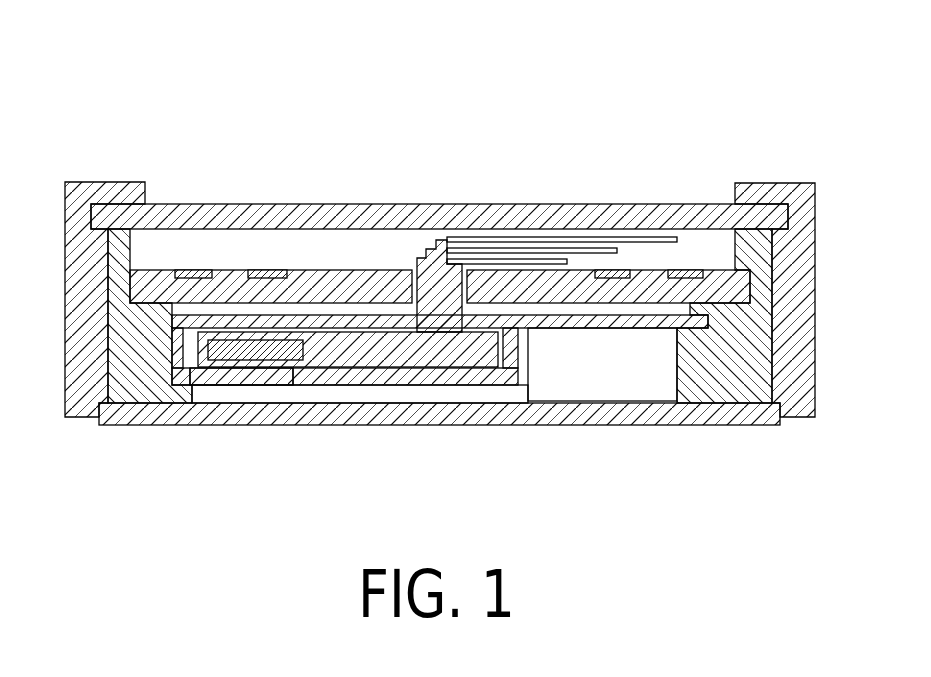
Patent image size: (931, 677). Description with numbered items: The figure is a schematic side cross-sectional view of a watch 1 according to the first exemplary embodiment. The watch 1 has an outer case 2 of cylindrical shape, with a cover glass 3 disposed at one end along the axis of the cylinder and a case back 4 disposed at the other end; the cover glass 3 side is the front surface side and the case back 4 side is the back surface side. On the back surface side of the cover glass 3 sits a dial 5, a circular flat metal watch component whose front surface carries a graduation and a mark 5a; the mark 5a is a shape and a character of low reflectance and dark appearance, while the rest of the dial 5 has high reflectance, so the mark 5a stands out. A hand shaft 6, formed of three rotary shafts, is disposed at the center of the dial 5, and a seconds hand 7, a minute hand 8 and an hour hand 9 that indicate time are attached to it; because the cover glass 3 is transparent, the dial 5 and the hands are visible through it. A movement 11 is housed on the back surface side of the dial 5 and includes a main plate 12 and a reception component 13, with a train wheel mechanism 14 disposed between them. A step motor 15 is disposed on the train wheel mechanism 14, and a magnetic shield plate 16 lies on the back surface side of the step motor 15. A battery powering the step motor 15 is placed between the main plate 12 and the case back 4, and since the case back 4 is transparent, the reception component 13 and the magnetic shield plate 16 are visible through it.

The watch 1 is at (777, 85).
The outer case 2 is at (805, 269).
The cover glass 3 is at (372, 215).
The case back 4 is at (131, 412).
The dial 5 is at (229, 282).
The mark 5a is at (195, 268).
The hand shaft 6 is at (419, 256).
The seconds hand 7 is at (667, 237).
The minute hand 8 is at (591, 248).
The hour hand 9 is at (548, 262).
The movement 11 is at (55, 315).
The main plate 12 is at (318, 318).
The reception component 13 is at (400, 378).
The train wheel mechanism 14 is at (441, 350).
The step motor 15 is at (301, 352).
The magnetic shield plate 16 is at (262, 378).